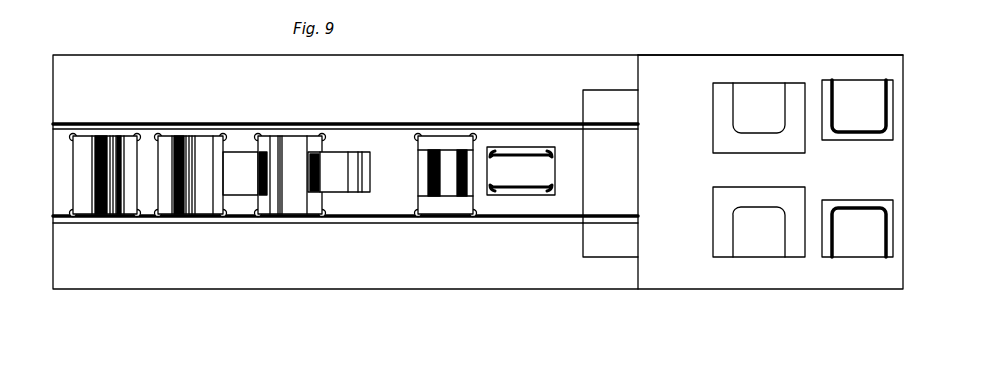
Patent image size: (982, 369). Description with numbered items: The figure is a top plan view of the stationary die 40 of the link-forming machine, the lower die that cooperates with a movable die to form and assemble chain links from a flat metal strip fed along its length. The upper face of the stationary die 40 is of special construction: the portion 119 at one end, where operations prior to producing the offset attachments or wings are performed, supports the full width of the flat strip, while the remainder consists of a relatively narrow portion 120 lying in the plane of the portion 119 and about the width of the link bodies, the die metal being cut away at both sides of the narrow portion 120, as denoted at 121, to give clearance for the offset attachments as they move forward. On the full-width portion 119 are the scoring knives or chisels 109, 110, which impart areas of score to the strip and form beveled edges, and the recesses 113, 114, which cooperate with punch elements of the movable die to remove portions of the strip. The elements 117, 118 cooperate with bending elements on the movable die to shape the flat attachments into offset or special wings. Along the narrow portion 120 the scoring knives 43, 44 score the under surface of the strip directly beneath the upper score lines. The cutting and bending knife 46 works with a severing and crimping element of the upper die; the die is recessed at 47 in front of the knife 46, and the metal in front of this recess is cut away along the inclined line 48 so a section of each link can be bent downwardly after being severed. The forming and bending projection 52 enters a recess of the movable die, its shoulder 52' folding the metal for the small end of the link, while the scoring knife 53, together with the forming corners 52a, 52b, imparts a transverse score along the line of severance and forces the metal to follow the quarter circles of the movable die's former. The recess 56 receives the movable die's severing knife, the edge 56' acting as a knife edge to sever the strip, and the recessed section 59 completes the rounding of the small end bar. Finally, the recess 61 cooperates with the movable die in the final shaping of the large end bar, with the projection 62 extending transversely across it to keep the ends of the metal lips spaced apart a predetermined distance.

The cut away portions 121 is at (447, 60).
The stationary die 40 is at (628, 277).
The narrow portion 120 is at (485, 140).
The element cooperating with bending element 117 is at (610, 107).
The element cooperating with bending element 118 is at (610, 240).
The projection 62 is at (92, 212).
The recess 61 is at (107, 212).
The recess 56 is at (191, 157).
The recessed section 59 is at (178, 212).
The knife edge 56' is at (224, 198).
The scoring knife 53 is at (273, 214).
The forming corner 52b is at (272, 157).
The forming and bending projection 52 is at (339, 145).
The forming corner 52a is at (322, 197).
The shoulder 52' is at (382, 172).
The recess 47 is at (445, 168).
The inclined line 48 is at (425, 175).
The cutting and bending knife 46 is at (470, 188).
The scoring knife 43 is at (527, 192).
The scoring knife 44 is at (525, 155).
The upper face portion 119 is at (883, 165).
The recess 113 is at (759, 118).
The recess 114 is at (759, 222).
The scoring knife 109 is at (884, 96).
The scoring knife 110 is at (888, 252).